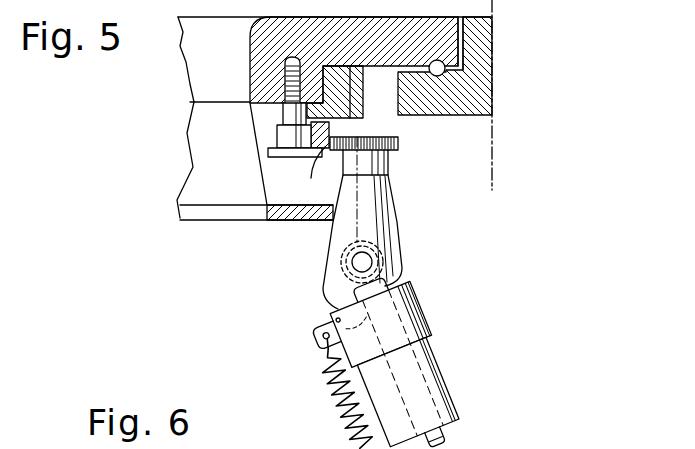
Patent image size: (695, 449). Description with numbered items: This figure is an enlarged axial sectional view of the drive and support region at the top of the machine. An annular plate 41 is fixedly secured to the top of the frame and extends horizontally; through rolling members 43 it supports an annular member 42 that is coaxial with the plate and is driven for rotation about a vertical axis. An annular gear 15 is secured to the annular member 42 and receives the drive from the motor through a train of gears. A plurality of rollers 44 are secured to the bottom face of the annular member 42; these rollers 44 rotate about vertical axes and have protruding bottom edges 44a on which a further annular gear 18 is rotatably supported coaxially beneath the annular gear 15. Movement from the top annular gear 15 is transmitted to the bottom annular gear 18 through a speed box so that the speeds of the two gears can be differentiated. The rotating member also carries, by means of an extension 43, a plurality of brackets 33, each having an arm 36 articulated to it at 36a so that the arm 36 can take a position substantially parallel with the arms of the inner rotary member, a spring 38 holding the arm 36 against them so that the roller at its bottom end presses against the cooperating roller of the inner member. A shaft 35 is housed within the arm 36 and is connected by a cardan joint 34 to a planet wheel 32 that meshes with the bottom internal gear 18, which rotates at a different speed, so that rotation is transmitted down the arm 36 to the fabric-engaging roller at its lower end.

The annular gear 15 is at (340, 106).
The annular gear 18 is at (309, 174).
The planet wheel 32 is at (398, 143).
The bracket 33 is at (386, 200).
The cardan joint 34 is at (391, 262).
The shaft 35 is at (442, 434).
The arm 36 is at (431, 385).
The articulation 36a is at (336, 320).
The spring 38 is at (337, 398).
The annular plate 41 is at (475, 97).
The annular member 42 is at (460, 31).
The rolling member 43 is at (437, 116).
The roller 44 is at (278, 138).
The protruding bottom edge 44a is at (280, 156).